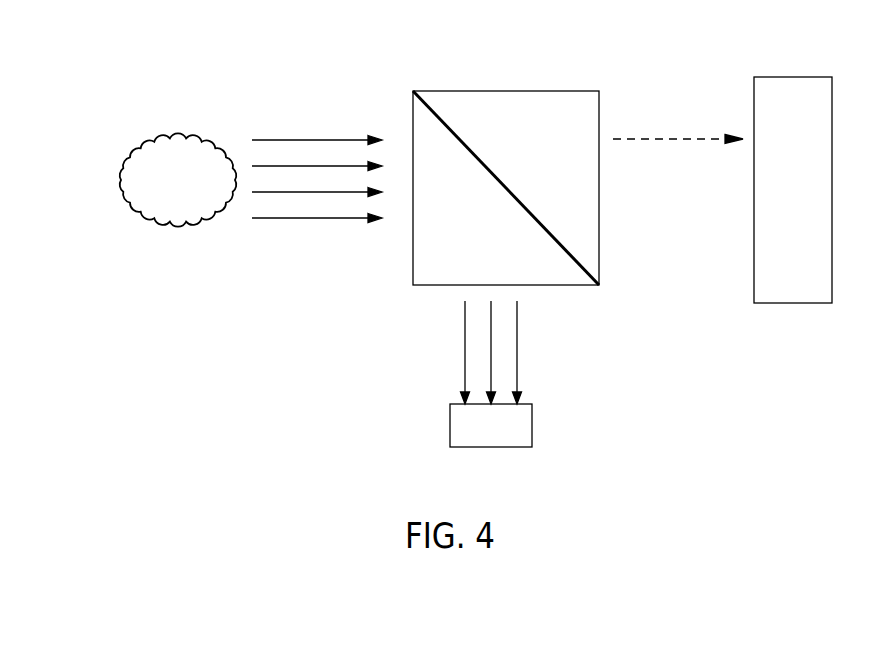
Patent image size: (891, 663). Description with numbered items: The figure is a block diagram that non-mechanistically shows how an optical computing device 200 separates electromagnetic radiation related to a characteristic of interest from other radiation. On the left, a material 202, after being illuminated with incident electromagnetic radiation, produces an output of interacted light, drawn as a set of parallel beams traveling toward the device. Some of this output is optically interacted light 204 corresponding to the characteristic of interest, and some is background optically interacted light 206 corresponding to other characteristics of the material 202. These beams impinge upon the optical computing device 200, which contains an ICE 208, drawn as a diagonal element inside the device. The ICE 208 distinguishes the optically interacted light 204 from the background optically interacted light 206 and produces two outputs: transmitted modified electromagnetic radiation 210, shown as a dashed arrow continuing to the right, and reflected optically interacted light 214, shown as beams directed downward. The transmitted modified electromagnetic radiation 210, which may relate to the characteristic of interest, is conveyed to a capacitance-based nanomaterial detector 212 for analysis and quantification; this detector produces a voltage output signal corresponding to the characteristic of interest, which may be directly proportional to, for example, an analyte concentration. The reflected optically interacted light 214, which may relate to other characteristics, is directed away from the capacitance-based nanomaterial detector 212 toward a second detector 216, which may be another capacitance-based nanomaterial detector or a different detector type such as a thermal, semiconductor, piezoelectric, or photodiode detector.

The optical computing device 200 is at (449, 78).
The material 202 is at (139, 148).
The optically interacted light 204 is at (321, 147).
The background optically interacted light 206 is at (311, 210).
The ICE 208 is at (488, 168).
The transmitted modified electromagnetic radiation 210 is at (658, 139).
The capacitance-based nanomaterial detector 212 is at (816, 196).
The reflected optically interacted light 214 is at (517, 333).
The second detector 216 is at (509, 439).